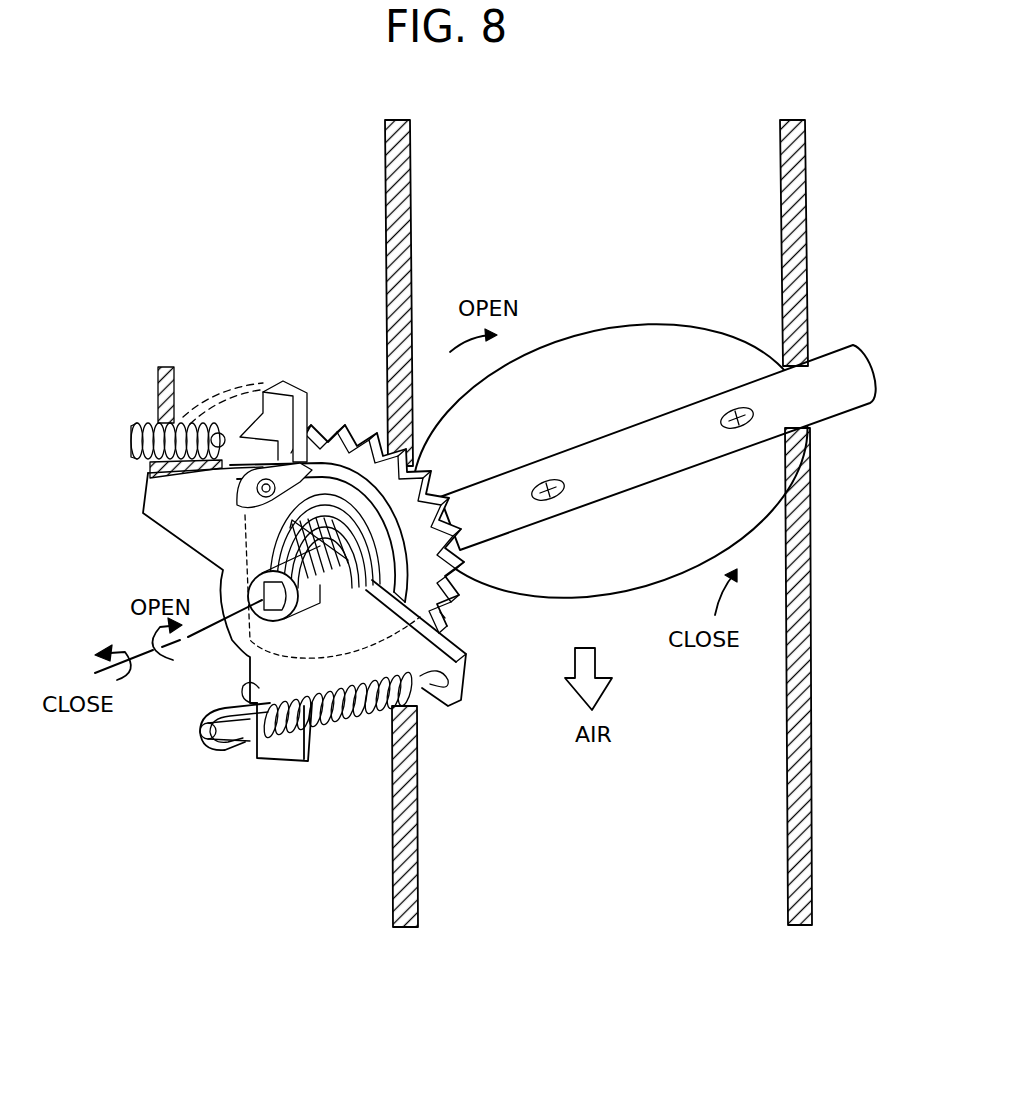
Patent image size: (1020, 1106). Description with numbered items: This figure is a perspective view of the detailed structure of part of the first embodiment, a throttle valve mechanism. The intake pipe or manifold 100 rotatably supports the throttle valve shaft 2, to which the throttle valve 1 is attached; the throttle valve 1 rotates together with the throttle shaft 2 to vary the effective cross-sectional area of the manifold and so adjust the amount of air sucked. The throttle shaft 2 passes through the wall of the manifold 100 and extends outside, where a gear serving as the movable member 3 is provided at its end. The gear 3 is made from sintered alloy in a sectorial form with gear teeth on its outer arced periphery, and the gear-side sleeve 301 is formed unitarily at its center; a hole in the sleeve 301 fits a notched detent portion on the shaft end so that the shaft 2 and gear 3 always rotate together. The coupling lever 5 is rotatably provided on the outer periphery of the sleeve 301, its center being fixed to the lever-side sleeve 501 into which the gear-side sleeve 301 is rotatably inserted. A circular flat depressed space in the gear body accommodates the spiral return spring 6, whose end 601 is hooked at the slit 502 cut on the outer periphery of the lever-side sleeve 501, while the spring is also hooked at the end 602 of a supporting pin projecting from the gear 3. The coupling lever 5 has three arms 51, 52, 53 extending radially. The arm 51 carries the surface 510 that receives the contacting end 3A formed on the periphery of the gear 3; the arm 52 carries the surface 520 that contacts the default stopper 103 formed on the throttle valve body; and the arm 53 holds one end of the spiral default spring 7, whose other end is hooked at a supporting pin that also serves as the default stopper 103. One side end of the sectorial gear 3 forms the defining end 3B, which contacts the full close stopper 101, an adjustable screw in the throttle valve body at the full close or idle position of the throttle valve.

The throttle valve 1 is at (588, 345).
The throttle valve shaft 2 is at (846, 392).
The gear 3 is at (466, 592).
The contacting end 3A is at (320, 427).
The defining end 3B is at (240, 418).
The coupling lever 5 is at (170, 545).
The return spring 6 is at (445, 563).
The default spring 7 is at (348, 725).
The arm 51 is at (157, 505).
The arm 52 is at (290, 761).
The arm 53 is at (445, 707).
The intake pipe (manifold) 100 is at (810, 622).
The full close stopper 101 is at (148, 425).
The default stopper 103 is at (212, 752).
The gear-side sleeve 301 is at (305, 612).
The lever-side sleeve 501 is at (350, 590).
The slit 502 is at (440, 612).
The surface 510 is at (300, 385).
The surface 520 is at (246, 684).
The end of the return spring 601 is at (395, 500).
The end of the supporting pin 602 is at (235, 505).